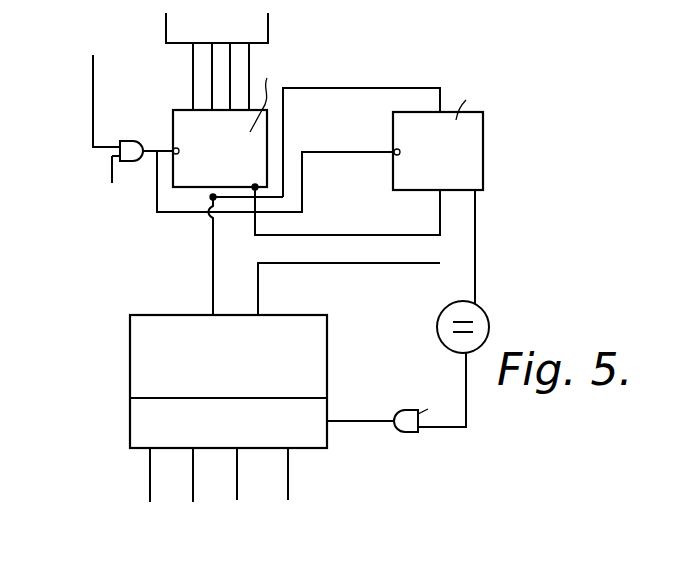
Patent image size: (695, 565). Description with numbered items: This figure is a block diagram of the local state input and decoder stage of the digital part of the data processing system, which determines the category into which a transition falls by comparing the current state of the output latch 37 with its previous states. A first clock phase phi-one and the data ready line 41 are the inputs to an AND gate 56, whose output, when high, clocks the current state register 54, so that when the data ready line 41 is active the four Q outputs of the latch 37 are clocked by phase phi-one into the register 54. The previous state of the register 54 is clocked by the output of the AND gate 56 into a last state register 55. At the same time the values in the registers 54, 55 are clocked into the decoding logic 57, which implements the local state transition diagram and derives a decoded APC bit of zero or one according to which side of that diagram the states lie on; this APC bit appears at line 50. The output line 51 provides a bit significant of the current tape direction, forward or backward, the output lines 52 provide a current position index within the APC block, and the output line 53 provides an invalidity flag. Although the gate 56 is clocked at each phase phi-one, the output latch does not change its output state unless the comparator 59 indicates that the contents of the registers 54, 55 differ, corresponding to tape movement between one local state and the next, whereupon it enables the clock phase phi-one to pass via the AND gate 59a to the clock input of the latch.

The output latch 37 is at (268, 27).
The data ready line 41 is at (92, 108).
The AND gate 56 is at (133, 141).
The current state register 54 is at (269, 120).
The last state register 55 is at (475, 133).
The comparator 59 is at (480, 313).
The AND gate 59a is at (410, 433).
The decoding logic 57 is at (142, 350).
The output line 53 is at (148, 486).
The output lines 52 is at (193, 488).
The output line 51 is at (237, 490).
The line 50 is at (288, 478).